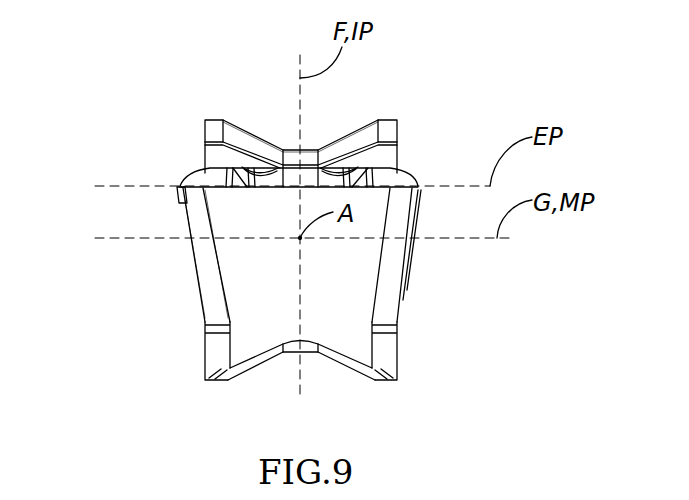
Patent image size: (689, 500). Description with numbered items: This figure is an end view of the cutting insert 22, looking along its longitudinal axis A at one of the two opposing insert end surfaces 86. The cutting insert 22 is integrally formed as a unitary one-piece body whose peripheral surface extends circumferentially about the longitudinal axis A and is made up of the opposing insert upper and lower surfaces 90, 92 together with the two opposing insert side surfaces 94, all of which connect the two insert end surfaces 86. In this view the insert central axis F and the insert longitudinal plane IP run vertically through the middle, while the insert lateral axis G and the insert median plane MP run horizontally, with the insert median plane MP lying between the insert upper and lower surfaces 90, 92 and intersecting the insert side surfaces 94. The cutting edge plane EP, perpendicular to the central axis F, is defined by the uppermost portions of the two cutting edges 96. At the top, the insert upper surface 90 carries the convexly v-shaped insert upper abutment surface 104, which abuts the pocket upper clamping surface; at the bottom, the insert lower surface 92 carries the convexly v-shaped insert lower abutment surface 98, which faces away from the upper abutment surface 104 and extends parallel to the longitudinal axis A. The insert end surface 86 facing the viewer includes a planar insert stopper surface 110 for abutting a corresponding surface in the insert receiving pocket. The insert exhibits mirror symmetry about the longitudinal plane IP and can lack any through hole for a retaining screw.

The cutting insert 22 is at (495, 65).
The insert upper surface 90 is at (248, 113).
The insert upper abutment surface 104 is at (348, 120).
The cutting edge 96 is at (380, 172).
The insert stopper surface 110 is at (235, 213).
The insert side surface 94 is at (188, 257).
The insert end surface 86 is at (348, 298).
The insert lower abutment surface 98 is at (355, 373).
The insert lower surface 92 is at (253, 378).